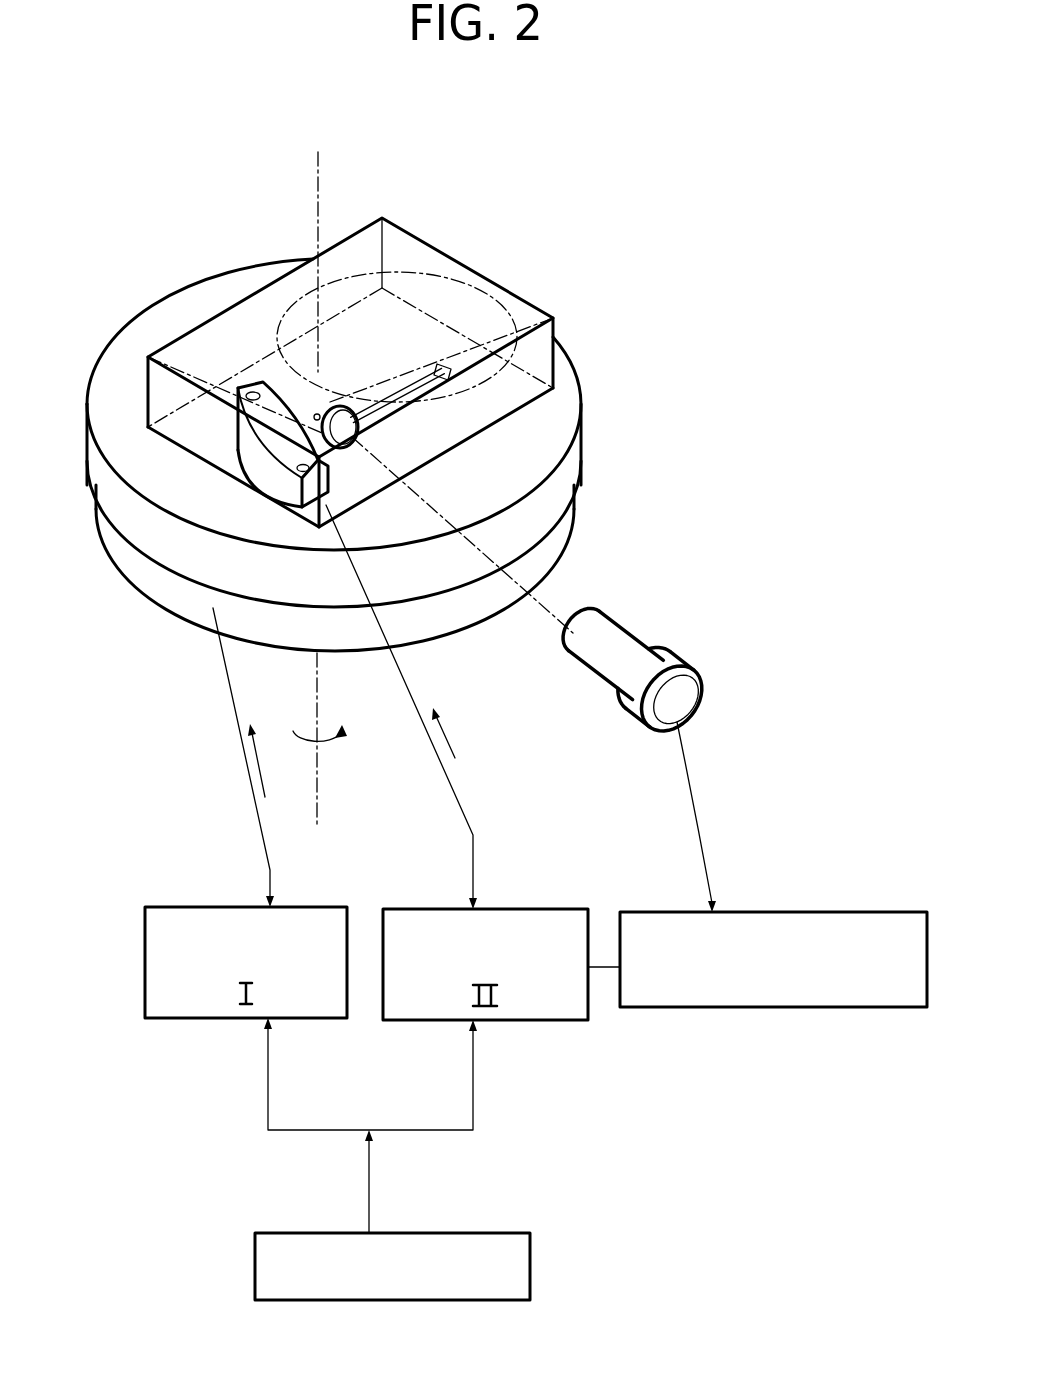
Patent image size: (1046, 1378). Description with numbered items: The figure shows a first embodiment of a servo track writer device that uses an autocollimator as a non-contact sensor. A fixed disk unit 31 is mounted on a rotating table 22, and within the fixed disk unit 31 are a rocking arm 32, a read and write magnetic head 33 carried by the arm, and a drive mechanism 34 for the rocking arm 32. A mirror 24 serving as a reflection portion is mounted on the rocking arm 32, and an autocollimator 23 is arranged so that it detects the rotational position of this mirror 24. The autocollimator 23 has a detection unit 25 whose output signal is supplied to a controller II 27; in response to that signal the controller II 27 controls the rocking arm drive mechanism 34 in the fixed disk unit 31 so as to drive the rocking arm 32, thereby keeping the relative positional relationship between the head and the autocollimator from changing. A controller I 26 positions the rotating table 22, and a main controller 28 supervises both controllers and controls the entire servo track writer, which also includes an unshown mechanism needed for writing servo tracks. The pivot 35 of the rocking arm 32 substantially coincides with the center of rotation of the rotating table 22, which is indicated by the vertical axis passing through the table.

The rotating table 22 is at (150, 585).
The autocollimator 23 is at (630, 652).
The mirror 24 is at (358, 425).
The detection unit of the autocollimator 25 is at (818, 912).
The controller I 26 is at (300, 907).
The controller II 27 is at (517, 909).
The main controller 28 is at (532, 1260).
The fixed disk unit 31 is at (430, 248).
The rocking arm 32 is at (423, 370).
The read and write magnetic head 33 is at (538, 322).
The drive mechanism for the rocking arm 34 is at (253, 387).
The pivot 35 is at (320, 413).